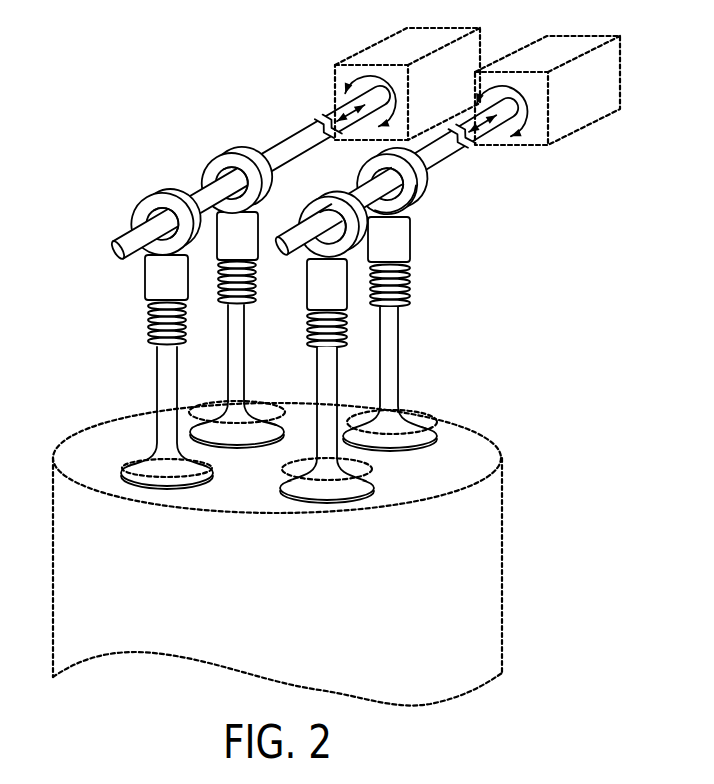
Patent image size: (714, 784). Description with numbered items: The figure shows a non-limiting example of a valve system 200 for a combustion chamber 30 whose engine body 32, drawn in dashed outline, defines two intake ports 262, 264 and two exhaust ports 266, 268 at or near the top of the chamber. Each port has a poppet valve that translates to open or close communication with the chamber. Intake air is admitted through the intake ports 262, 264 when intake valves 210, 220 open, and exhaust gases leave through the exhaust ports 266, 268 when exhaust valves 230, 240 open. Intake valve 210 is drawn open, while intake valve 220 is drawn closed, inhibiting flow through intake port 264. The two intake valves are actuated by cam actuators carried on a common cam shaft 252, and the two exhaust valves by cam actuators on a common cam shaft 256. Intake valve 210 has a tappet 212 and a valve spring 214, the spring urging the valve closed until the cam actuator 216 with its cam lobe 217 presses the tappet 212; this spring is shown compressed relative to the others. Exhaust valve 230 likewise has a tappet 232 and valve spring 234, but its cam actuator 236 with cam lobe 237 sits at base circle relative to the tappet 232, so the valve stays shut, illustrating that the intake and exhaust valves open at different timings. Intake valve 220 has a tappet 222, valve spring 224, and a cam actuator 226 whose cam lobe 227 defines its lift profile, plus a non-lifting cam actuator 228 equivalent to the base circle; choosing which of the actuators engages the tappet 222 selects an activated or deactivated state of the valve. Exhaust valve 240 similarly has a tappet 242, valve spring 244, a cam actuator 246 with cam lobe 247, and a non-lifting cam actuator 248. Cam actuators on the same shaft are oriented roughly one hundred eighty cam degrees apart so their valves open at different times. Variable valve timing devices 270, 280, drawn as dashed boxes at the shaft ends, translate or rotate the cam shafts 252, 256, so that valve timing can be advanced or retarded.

The combustion chamber 30 is at (288, 597).
The engine body 32 is at (502, 578).
The valve system 200 is at (552, 237).
The intake valve 210 is at (335, 393).
The tappet 212 is at (344, 298).
The valve spring 214 is at (308, 342).
The cam actuator 216 is at (309, 261).
The cam lobe 217 is at (342, 254).
The intake valve 220 is at (398, 357).
The tappet 222 is at (406, 252).
The valve spring 224 is at (410, 298).
The cam actuator 226 is at (413, 171).
The cam lobe 227 is at (370, 156).
The non-lifting cam actuator 228 is at (410, 212).
The exhaust valve 230 is at (160, 383).
The tappet 232 is at (183, 290).
The valve spring 234 is at (150, 333).
The cam actuator 236 is at (152, 207).
The cam lobe 237 is at (118, 225).
The exhaust valve 240 is at (231, 341).
The tappet 242 is at (255, 249).
The valve spring 244 is at (257, 302).
The cam actuator 246 is at (270, 176).
The cam lobe 247 is at (292, 188).
The non-lifting cam actuator 248 is at (224, 166).
The cam shaft 252 is at (455, 141).
The cam shaft 256 is at (286, 146).
The intake port 262 is at (371, 470).
The intake port 264 is at (444, 419).
The exhaust port 266 is at (123, 462).
The exhaust port 268 is at (269, 404).
The variable valve timing device 270 is at (600, 90).
The variable valve timing device 280 is at (480, 30).